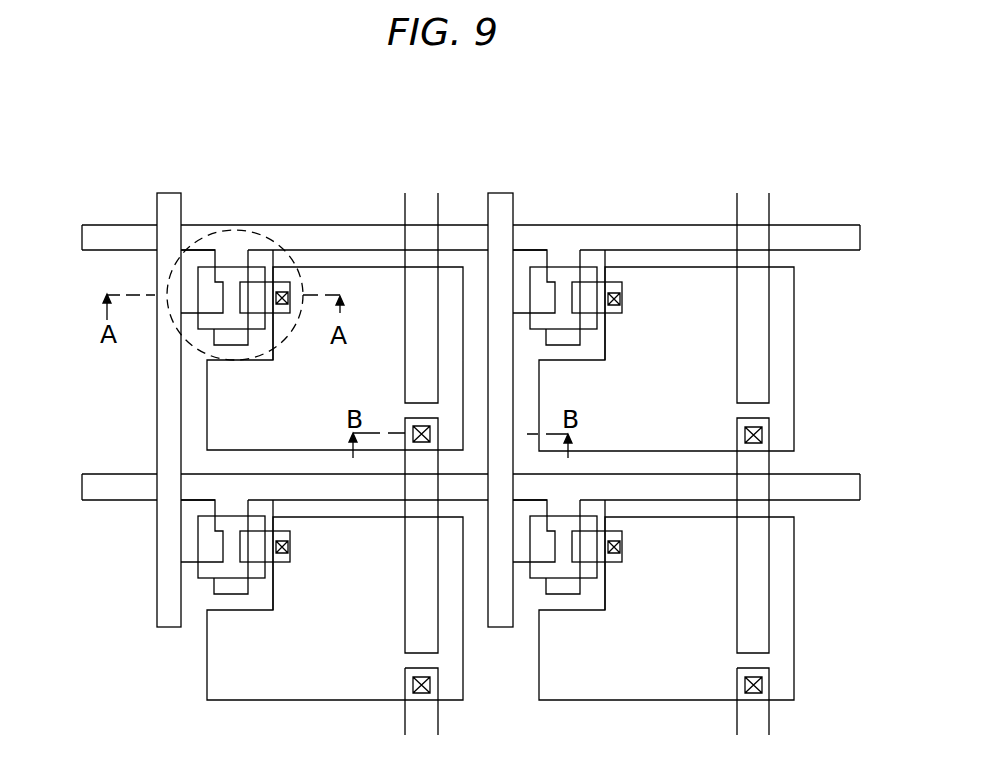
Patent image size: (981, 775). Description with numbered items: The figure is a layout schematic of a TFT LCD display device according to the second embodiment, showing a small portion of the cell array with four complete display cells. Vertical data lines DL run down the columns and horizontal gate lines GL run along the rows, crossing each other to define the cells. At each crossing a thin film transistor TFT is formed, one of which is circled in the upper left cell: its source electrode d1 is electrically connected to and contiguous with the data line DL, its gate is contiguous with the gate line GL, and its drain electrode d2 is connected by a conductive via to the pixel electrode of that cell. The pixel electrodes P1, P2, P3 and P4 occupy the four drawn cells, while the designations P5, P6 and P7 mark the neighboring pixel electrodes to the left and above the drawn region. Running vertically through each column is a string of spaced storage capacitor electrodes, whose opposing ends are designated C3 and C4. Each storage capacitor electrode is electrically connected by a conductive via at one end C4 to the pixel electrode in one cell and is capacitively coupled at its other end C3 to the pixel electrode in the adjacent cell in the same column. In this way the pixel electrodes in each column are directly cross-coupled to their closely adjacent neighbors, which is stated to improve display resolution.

The data line DL is at (172, 197).
The gate line GL is at (93, 238).
The storage capacitor electrode end C3 is at (405, 343).
The storage capacitor electrode end C4 is at (434, 440).
The pixel electrode P1 is at (333, 398).
The pixel electrode P2 is at (664, 398).
The pixel electrode P3 is at (328, 656).
The pixel electrode P4 is at (664, 656).
The pixel electrode P5 is at (100, 403).
The pixel electrode P6 is at (325, 147).
The pixel electrode P7 is at (648, 148).
The thin film transistor TFT is at (259, 358).
The source electrode d1 is at (207, 298).
The drain electrode d2 is at (263, 298).